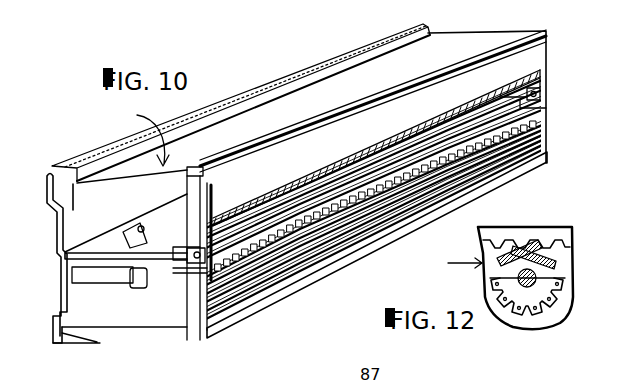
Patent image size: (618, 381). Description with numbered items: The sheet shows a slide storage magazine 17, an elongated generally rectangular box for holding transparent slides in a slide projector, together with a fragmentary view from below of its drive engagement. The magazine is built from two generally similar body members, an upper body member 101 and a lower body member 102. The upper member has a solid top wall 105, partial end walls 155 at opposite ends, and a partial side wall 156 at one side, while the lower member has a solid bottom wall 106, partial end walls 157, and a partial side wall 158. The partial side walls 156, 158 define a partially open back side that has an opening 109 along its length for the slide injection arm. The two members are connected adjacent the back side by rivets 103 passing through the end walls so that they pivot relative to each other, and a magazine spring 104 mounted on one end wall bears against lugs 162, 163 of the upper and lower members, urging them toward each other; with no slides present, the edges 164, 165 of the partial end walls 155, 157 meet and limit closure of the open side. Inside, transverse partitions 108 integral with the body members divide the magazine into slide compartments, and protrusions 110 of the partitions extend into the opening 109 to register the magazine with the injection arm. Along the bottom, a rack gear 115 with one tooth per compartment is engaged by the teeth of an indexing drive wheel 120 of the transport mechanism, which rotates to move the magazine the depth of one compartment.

In FIG. 10, the slide storage magazine 17 is at (461, 26).
In FIG. 10, the upper body member 101 is at (140, 136).
In FIG. 10, the lower body member 102 is at (159, 322).
In FIG. 10, the rivets 103 is at (540, 91).
In FIG. 10, the magazine spring 104 is at (107, 232).
In FIG. 10, the top wall 105 is at (282, 105).
In FIG. 10, the bottom wall 106 is at (172, 328).
In FIG. 10, the transverse partitions 108 is at (431, 180).
In FIG. 10, the opening 109 is at (497, 116).
In FIG. 10, the protrusions 110 is at (463, 151).
In FIG. 10, the partial end walls 155 is at (80, 212).
In FIG. 10, the partial side wall 156 is at (533, 48).
In FIG. 10, the partial end walls 157 is at (103, 313).
In FIG. 10, the partial side wall 158 is at (290, 268).
In FIG. 10, the lug 162 is at (134, 228).
In FIG. 10, the lug 163 is at (148, 275).
In FIG. 10, the edge 164 is at (62, 259).
In FIG. 10, the edge 165 is at (92, 268).
In FIG. 12, the rack gear 115 is at (547, 237).
In FIG. 12, the indexing drive wheel 120 is at (567, 285).